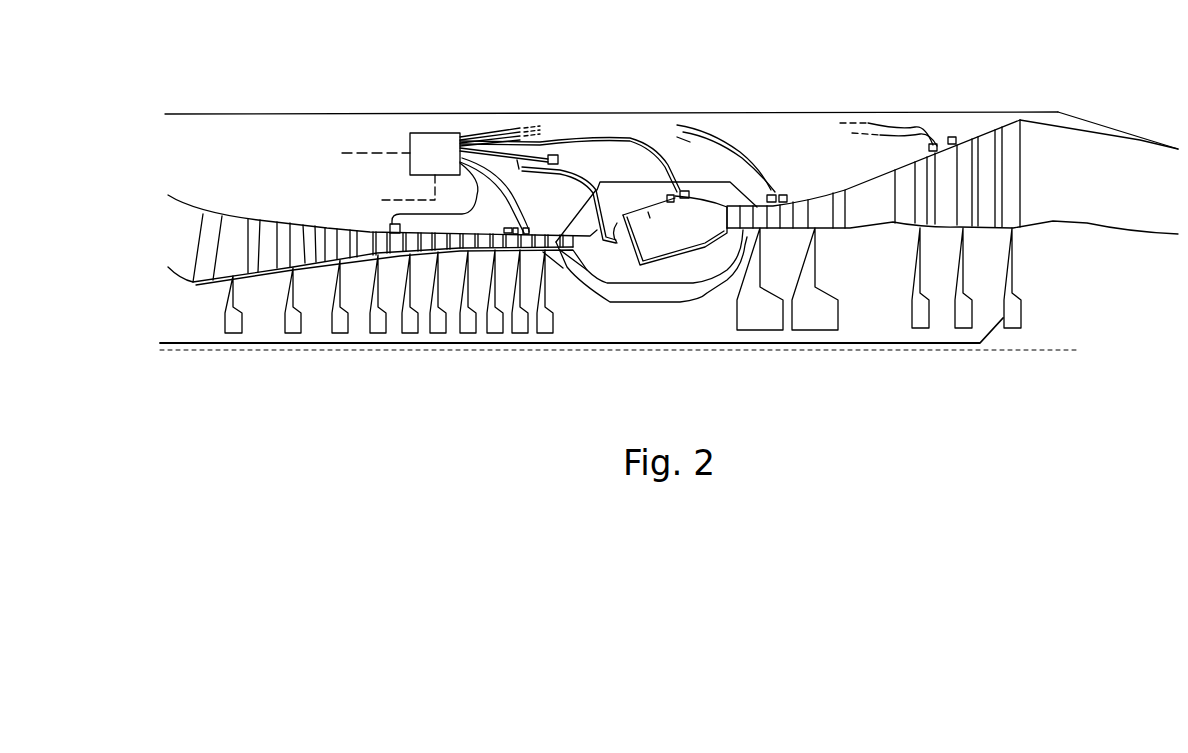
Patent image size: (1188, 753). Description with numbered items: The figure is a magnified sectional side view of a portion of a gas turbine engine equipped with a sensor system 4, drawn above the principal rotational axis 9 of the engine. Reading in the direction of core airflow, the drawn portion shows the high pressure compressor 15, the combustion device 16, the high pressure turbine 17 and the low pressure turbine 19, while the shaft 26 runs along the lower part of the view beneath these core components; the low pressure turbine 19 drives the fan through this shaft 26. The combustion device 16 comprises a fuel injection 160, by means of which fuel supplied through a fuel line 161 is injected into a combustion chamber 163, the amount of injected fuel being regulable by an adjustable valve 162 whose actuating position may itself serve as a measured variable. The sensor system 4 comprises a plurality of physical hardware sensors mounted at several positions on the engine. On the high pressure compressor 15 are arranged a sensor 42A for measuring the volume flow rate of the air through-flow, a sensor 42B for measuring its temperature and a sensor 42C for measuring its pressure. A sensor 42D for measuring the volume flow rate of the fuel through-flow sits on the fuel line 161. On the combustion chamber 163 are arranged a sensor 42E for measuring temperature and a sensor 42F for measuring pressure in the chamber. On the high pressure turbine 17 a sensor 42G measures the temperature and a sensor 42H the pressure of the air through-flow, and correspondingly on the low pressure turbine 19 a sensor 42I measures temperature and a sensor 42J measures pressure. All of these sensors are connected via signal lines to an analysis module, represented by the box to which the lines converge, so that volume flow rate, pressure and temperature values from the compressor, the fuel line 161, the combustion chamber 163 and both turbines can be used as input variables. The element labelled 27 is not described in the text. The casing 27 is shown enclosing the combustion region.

The sensor system 4 is at (611, 72).
The principal rotational axis 9 is at (620, 392).
The high pressure compressor 15 is at (425, 158).
The combustion device 16 is at (677, 145).
The high pressure turbine 17 is at (952, 159).
The low pressure turbine 19 is at (1061, 92).
The shaft 26 is at (581, 376).
The combustor casing 27 is at (651, 316).
The fuel injection 160 is at (583, 142).
The fuel line 161 is at (566, 163).
The valve 162 is at (591, 142).
The combustion chamber 163 is at (671, 269).
The sensor 42A is at (395, 198).
The sensor 42B is at (483, 198).
The sensor 42C is at (543, 210).
The sensor 42D is at (509, 113).
The sensor 42E is at (637, 277).
The sensor 42F is at (580, 196).
The sensor 42G is at (726, 132).
The sensor 42H is at (812, 132).
The sensor 42I is at (888, 147).
The sensor 42J is at (984, 104).